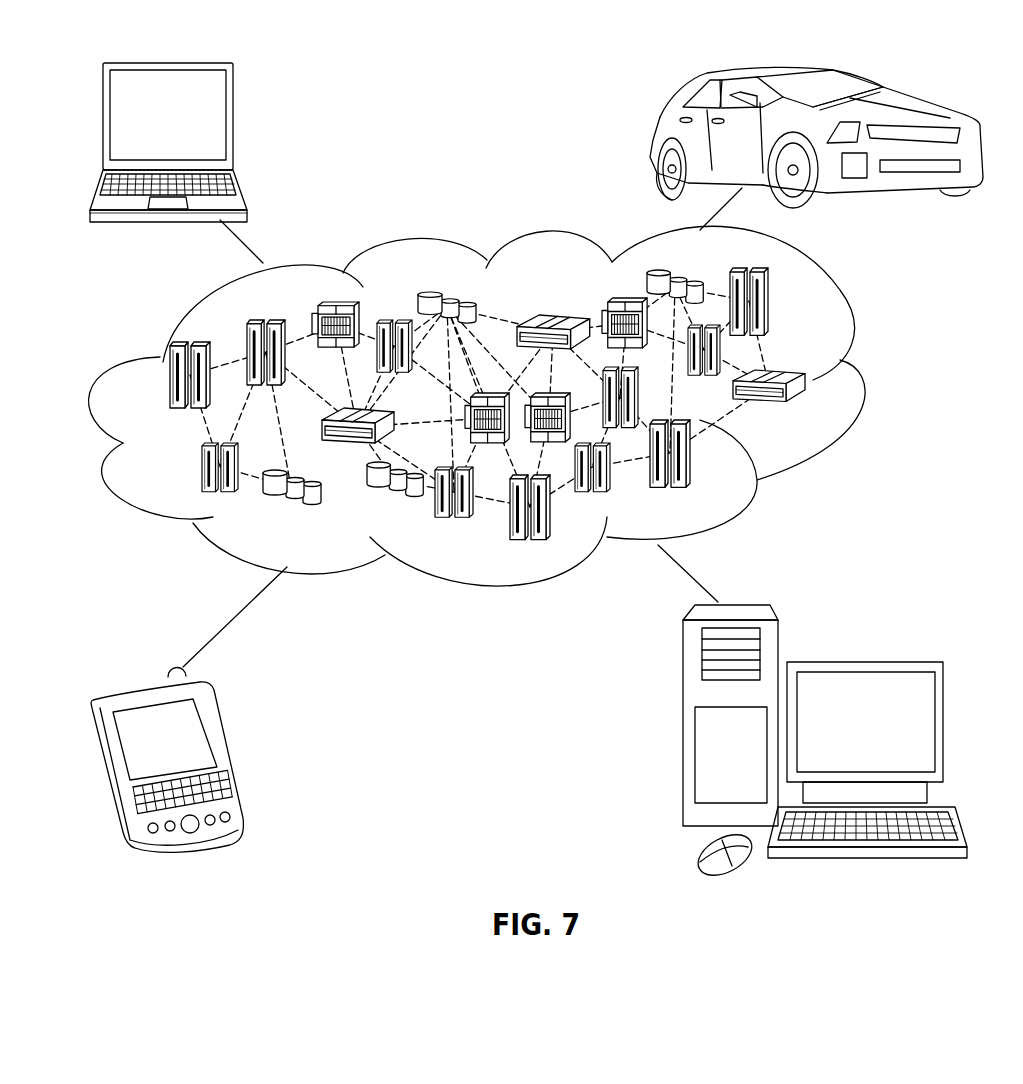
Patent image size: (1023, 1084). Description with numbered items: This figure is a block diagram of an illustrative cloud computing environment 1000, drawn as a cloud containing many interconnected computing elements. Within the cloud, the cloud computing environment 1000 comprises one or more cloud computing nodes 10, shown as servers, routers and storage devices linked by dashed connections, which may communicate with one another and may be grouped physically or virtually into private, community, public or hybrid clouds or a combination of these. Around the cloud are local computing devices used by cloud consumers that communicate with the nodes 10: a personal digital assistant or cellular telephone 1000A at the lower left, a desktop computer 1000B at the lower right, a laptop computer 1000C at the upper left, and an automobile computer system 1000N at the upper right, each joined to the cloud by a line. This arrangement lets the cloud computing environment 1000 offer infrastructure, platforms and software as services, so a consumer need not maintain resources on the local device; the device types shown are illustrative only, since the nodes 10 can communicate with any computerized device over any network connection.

The cloud computing nodes 10 is at (811, 415).
The cloud computing environment 1000 is at (868, 386).
The personal digital assistant (PDA) or cellular telephone 1000A is at (225, 748).
The desktop computer 1000B is at (860, 662).
The laptop computer 1000C is at (240, 122).
The automobile computer system 1000N is at (652, 140).